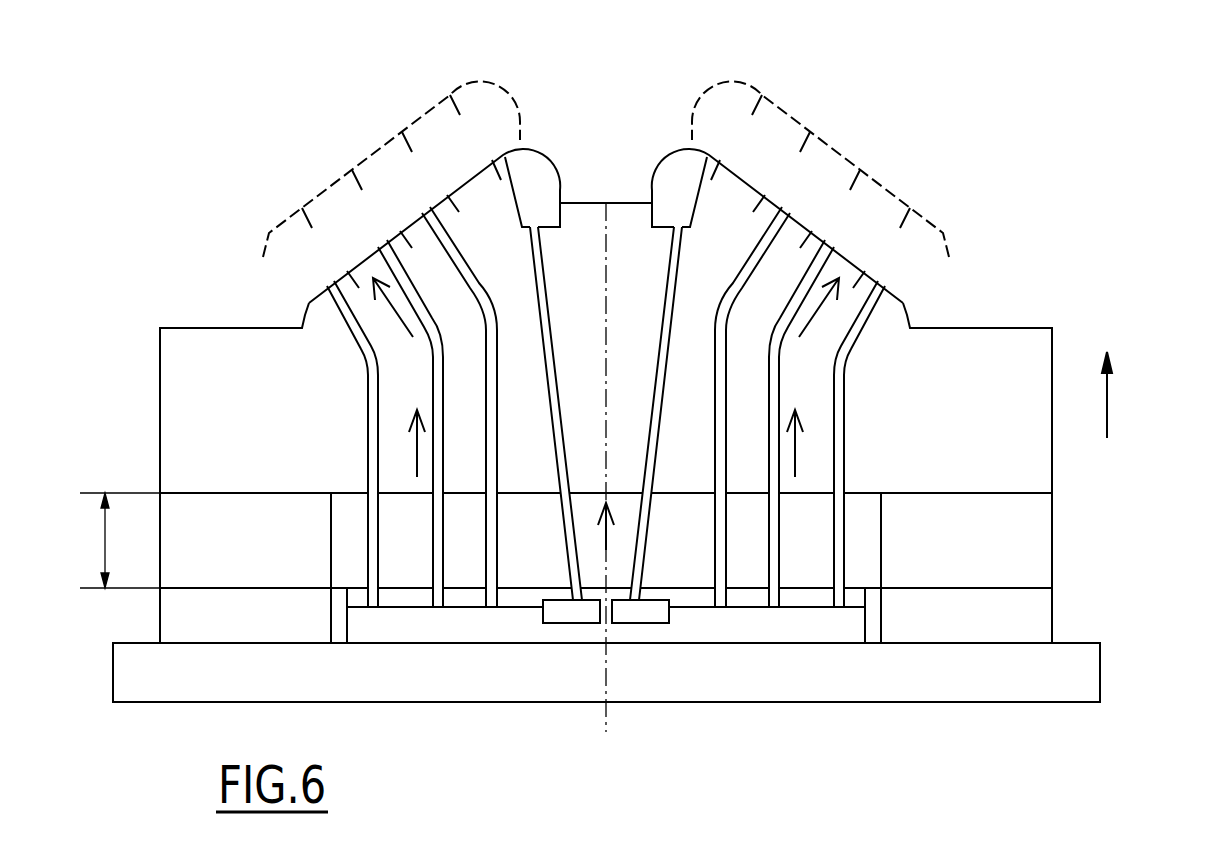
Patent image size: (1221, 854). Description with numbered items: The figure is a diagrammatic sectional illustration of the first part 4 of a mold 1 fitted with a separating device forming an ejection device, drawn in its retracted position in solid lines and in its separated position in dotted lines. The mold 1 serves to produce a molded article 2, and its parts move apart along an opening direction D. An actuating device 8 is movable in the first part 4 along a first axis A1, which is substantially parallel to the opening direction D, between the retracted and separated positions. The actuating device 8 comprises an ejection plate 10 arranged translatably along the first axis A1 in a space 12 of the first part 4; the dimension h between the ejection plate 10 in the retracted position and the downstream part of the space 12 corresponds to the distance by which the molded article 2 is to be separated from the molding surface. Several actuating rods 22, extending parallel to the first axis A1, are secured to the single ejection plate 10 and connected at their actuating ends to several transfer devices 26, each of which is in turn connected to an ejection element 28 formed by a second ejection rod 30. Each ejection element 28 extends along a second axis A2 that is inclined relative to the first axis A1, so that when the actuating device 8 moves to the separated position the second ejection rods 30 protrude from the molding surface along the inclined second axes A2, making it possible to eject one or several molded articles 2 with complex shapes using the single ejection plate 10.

The mold 1 is at (642, 394).
The molded article 2 is at (801, 292).
The first part 4 is at (1030, 465).
The actuating device 8 is at (759, 596).
The ejection plate 10 is at (853, 627).
The space 12 is at (343, 540).
The actuating rod 22 is at (437, 548).
The transfer device 26 is at (457, 257).
The ejection element 28 is at (606, 166).
The second ejection rod 30 is at (405, 225).
The first axis A1 is at (637, 548).
The second axis A2 is at (400, 308).
The opening direction D is at (1108, 407).
The dimension h is at (117, 540).